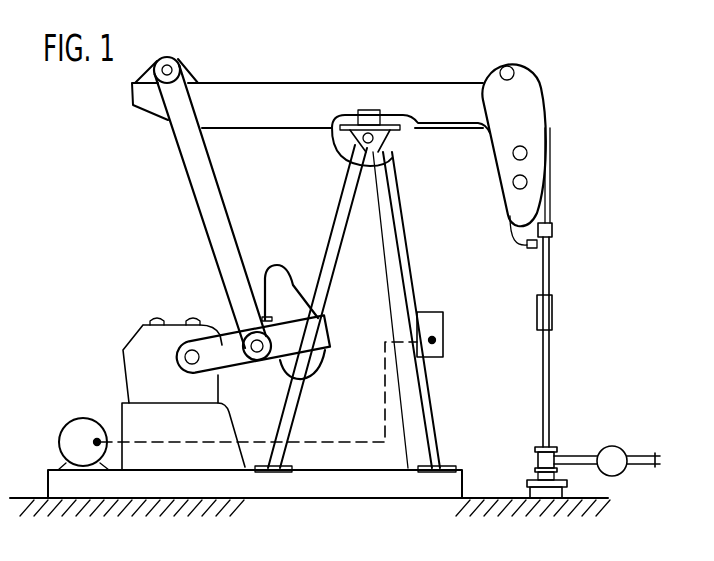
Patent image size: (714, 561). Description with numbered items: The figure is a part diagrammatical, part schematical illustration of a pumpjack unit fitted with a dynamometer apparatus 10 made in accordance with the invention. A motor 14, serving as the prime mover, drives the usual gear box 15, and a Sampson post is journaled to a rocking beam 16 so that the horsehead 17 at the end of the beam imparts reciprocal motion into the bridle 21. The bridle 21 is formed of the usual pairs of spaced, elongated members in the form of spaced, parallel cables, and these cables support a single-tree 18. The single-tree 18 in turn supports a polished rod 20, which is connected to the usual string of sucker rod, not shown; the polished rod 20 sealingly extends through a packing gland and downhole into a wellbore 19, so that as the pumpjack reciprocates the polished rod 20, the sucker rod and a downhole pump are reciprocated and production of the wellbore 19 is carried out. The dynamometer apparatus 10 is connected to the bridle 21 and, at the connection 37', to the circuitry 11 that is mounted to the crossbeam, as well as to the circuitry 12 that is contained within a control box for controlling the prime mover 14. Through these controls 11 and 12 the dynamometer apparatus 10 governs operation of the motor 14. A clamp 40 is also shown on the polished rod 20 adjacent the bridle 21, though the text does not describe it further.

The dynamometer apparatus 10 is at (586, 236).
The circuitry 11 is at (366, 110).
The circuitry 12 is at (432, 340).
The motor 14 is at (62, 423).
The gear box 15 is at (122, 346).
The rocking beam 16 is at (400, 83).
The horsehead 17 is at (528, 110).
The single-tree 18 is at (553, 323).
The wellbore 19 is at (527, 478).
The polished rod 20 is at (552, 386).
The bridle 21 is at (550, 190).
The connection point 37' is at (492, 235).
The polished rod clamp 40 is at (560, 221).